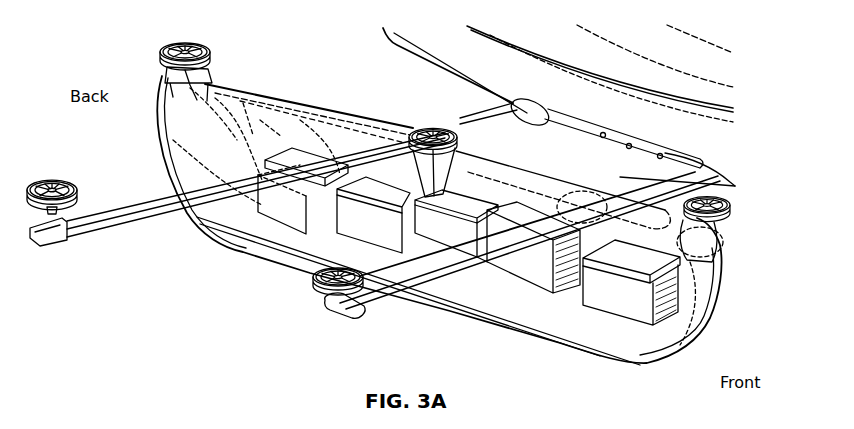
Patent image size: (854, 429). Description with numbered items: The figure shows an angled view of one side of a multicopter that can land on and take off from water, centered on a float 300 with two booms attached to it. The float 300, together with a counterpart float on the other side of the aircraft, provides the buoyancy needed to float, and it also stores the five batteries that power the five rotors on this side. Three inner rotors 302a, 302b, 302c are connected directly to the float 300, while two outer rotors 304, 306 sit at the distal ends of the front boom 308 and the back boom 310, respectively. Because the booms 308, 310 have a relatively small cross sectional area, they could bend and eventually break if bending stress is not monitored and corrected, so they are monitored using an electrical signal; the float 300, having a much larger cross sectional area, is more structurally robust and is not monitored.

The float 300 is at (318, 110).
The inner rotor 302a is at (733, 200).
The inner rotor 302b is at (428, 122).
The inner rotor 302c is at (212, 52).
The outer rotor 304 is at (313, 287).
The outer rotor 306 is at (67, 182).
The front boom 308 is at (380, 303).
The back boom 310 is at (140, 203).